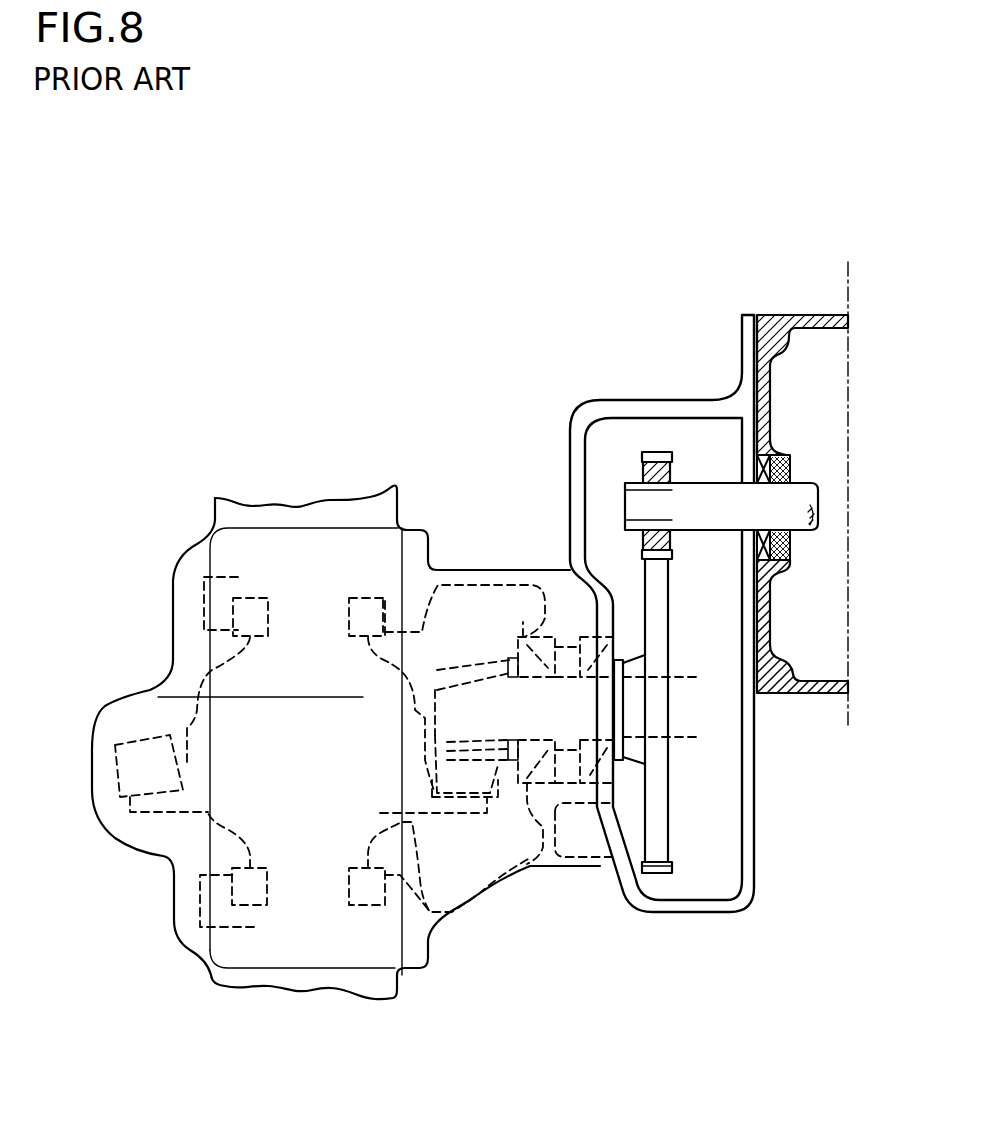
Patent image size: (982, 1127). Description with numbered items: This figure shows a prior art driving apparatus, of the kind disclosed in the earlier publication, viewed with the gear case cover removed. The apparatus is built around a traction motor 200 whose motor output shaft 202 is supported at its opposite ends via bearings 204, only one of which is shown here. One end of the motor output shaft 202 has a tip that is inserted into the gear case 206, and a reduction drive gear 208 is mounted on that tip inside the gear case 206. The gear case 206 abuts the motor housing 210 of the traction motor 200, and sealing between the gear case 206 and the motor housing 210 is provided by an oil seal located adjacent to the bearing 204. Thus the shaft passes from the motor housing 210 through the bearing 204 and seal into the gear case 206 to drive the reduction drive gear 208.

The traction motor 200 is at (822, 647).
The motor output shaft 202 is at (693, 483).
The bearing 204 is at (790, 466).
The gear case 206 is at (690, 910).
The reduction drive gear 208 is at (657, 453).
The motor housing 210 is at (783, 332).